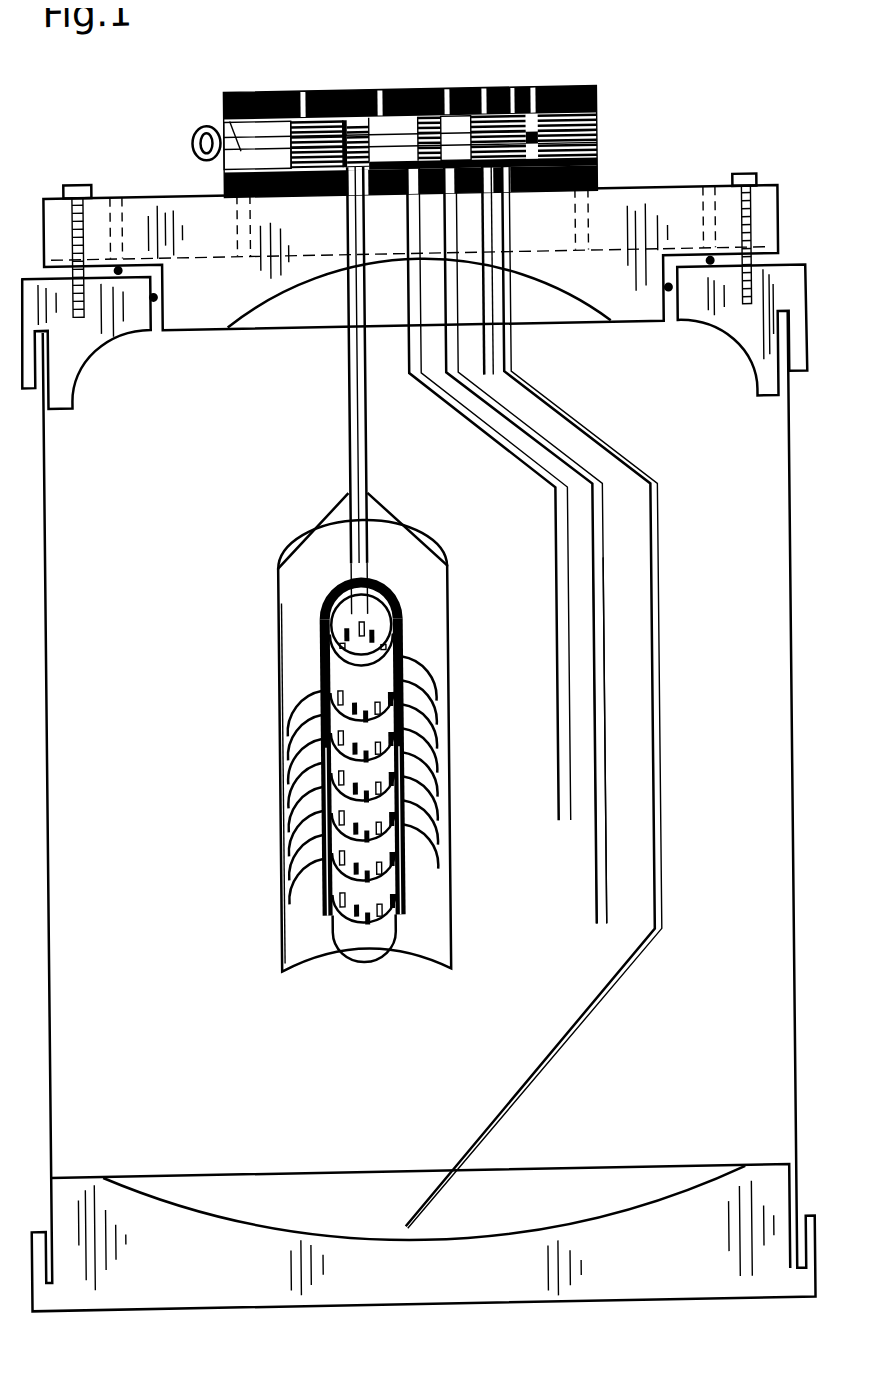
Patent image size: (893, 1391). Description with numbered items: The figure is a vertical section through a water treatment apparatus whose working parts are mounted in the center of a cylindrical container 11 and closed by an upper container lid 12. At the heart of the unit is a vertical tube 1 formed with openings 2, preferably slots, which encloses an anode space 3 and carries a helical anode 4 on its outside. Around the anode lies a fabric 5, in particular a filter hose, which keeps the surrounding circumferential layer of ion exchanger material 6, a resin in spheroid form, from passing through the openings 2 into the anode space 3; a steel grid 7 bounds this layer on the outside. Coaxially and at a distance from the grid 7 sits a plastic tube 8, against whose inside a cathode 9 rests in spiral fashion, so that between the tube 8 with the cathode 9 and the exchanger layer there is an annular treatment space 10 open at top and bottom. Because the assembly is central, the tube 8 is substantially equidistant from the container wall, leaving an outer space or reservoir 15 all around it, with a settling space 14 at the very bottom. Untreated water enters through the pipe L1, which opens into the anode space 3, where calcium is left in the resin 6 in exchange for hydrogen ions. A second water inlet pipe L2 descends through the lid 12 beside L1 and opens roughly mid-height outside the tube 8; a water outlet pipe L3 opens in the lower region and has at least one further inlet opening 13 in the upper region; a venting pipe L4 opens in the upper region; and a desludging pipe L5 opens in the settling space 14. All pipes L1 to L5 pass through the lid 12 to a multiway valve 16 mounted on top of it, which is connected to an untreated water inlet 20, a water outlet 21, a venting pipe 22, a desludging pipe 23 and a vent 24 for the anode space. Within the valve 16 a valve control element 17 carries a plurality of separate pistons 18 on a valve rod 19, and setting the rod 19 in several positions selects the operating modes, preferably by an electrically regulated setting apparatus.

The vertical tube 1 is at (340, 660).
The openings 2 is at (378, 626).
The anode space 3 is at (348, 618).
The helical anode 4 is at (320, 711).
The fabric 5 is at (319, 820).
The ion exchanger material 6 is at (319, 770).
The steel grid 7 is at (318, 856).
The plastic tube 8 is at (296, 917).
The cathode 9 is at (420, 740).
The treatment space 10 is at (431, 868).
The cylindrical container 11 is at (47, 1031).
The upper container lid 12 is at (675, 204).
The further inlet opening 13 is at (605, 548).
The settling space 14 is at (567, 1188).
The outer space 15 is at (543, 655).
The multiway valve 16 is at (434, 105).
The valve control element 17 is at (596, 143).
The pistons 18 is at (538, 89).
The valve rod 19 is at (246, 107).
The untreated water inlet 20 is at (384, 104).
The water outlet 21 is at (451, 100).
The venting pipe 22 is at (489, 99).
The desludging pipe 23 is at (509, 99).
The vent for the anode space 24 is at (311, 104).
The water inlet pipe L1 is at (354, 226).
The second water inlet pipe L2 is at (415, 227).
The water outlet pipe L3 is at (447, 245).
The venting pipe L4 is at (492, 238).
The desludging pipe L5 is at (505, 229).